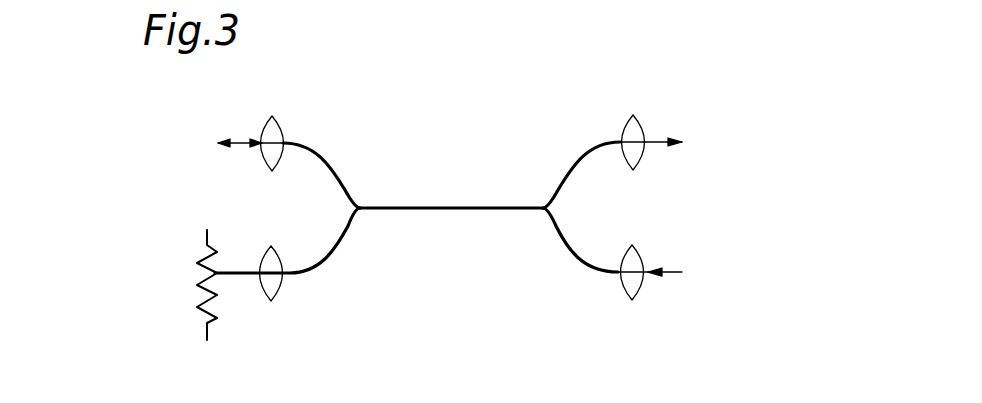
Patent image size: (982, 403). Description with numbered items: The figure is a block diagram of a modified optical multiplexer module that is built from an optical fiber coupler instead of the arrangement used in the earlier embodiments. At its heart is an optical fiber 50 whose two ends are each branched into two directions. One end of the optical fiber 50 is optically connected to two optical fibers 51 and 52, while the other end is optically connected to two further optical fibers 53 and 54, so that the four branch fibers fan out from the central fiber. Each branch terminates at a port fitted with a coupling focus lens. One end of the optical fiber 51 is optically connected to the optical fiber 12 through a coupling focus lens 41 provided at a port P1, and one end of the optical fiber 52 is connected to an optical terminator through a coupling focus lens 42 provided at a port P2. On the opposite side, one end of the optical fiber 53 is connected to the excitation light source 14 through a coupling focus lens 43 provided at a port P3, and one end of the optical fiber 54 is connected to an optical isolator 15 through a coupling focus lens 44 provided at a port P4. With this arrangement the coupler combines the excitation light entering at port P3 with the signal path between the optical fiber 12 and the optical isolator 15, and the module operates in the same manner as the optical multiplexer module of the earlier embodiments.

The optical fiber 50 is at (453, 206).
The optical fiber 51 is at (337, 167).
The optical fiber 52 is at (333, 245).
The optical fiber 53 is at (572, 245).
The optical fiber 54 is at (573, 162).
The coupling focus lens 41 is at (278, 121).
The coupling focus lens 42 is at (278, 298).
The coupling focus lens 43 is at (623, 290).
The coupling focus lens 44 is at (620, 133).
The port P1 is at (261, 141).
The port P2 is at (257, 287).
The port P3 is at (645, 281).
The port P4 is at (646, 142).
The optical fiber 12 is at (153, 152).
The excitation light source 14 is at (761, 274).
The optical isolator 15 is at (726, 150).